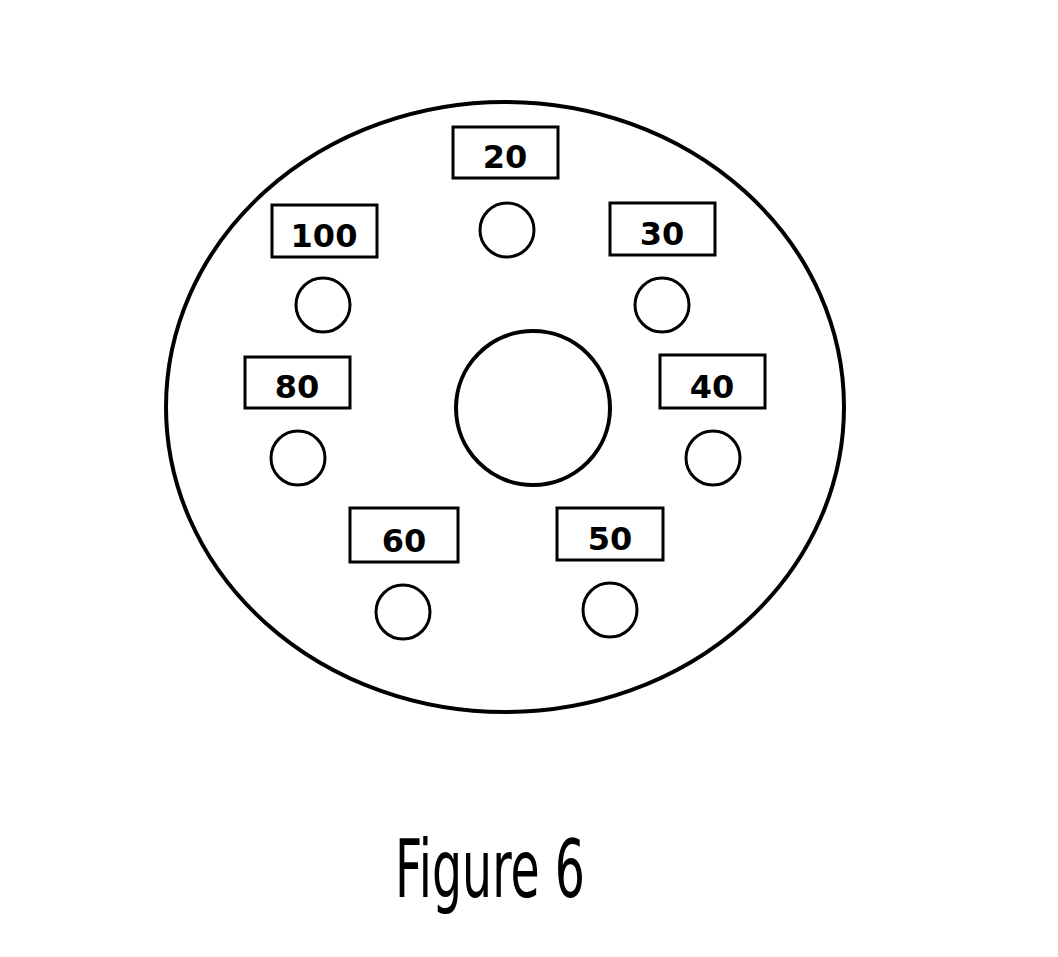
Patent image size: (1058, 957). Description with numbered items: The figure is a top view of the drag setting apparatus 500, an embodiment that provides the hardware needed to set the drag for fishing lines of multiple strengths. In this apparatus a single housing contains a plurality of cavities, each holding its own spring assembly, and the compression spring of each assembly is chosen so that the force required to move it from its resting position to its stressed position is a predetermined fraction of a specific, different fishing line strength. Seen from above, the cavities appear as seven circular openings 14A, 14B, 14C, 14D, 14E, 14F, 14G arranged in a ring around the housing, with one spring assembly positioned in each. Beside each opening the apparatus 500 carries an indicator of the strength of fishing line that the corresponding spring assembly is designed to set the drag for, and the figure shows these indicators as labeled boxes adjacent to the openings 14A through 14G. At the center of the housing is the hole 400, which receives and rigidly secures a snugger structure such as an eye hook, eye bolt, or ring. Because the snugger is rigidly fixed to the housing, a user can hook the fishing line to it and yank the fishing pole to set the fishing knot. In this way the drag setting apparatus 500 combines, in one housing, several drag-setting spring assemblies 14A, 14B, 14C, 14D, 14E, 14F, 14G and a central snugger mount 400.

The drag setting apparatus 500 is at (812, 152).
The hole 400 is at (558, 348).
The hole 14A is at (690, 300).
The hole 14B is at (723, 468).
The hole 14C is at (618, 622).
The hole 14D is at (392, 623).
The hole 14E is at (302, 465).
The hole 14F is at (317, 302).
The hole 14G is at (483, 223).